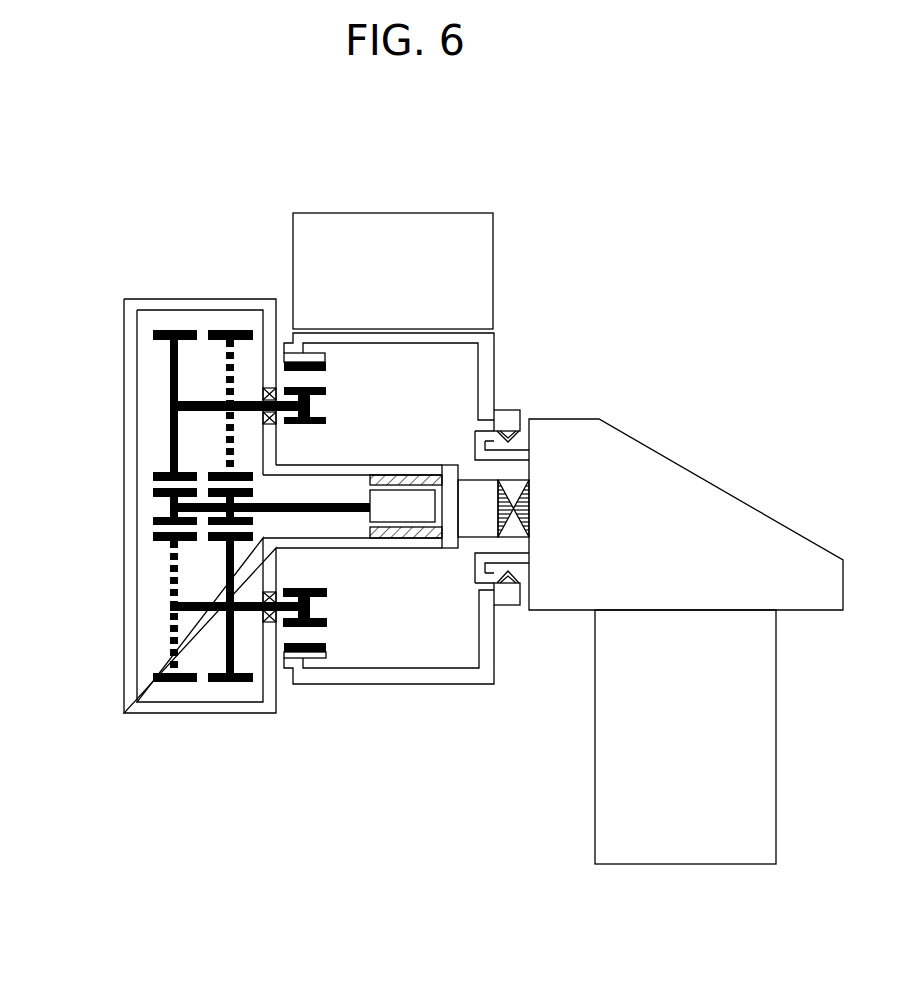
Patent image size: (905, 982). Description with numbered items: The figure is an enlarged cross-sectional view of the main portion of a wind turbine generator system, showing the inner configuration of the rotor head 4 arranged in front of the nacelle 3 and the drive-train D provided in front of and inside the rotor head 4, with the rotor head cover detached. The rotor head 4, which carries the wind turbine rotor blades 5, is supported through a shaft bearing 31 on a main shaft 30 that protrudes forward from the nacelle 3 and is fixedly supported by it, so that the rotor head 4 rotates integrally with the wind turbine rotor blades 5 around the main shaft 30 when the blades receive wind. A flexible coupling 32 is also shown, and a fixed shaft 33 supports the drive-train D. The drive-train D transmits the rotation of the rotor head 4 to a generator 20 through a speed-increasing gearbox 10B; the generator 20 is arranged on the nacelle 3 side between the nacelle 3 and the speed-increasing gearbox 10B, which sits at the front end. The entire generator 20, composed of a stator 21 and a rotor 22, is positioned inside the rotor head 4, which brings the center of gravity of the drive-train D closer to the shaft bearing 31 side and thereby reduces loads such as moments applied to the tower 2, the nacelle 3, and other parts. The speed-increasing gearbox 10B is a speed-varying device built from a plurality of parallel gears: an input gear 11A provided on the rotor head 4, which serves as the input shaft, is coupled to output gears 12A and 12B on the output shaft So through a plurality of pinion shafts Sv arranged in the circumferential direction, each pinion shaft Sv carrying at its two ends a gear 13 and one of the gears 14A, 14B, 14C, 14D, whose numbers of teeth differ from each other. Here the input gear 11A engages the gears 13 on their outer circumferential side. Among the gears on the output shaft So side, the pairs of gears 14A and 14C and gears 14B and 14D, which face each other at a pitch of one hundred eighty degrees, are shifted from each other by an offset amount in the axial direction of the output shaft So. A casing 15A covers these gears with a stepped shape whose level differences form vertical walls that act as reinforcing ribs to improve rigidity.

The tower 2 is at (777, 748).
The nacelle 3 is at (640, 437).
The rotor head 4 is at (450, 685).
The wind turbine rotor blades 5 is at (411, 213).
The speed-increasing gearbox 10B is at (112, 752).
The input gear 11A is at (327, 366).
The output gear 12A is at (153, 491).
The output gear 12B is at (257, 491).
The gear 13 is at (327, 392).
The gear 14A is at (162, 331).
The gear 14B is at (220, 331).
The gear 14C is at (166, 683).
The gear 14D is at (228, 683).
The casing 15A is at (125, 337).
The generator 20 is at (426, 455).
The stator 21 is at (386, 474).
The rotor 22 is at (413, 516).
The main shaft 30 is at (520, 449).
The shaft bearing 31 is at (509, 410).
The flexible coupling 32 is at (531, 507).
The fixed shaft 33 is at (472, 527).
The pinion shaft Sv is at (202, 412).
The output shaft So is at (345, 513).
The drive-train D is at (247, 762).